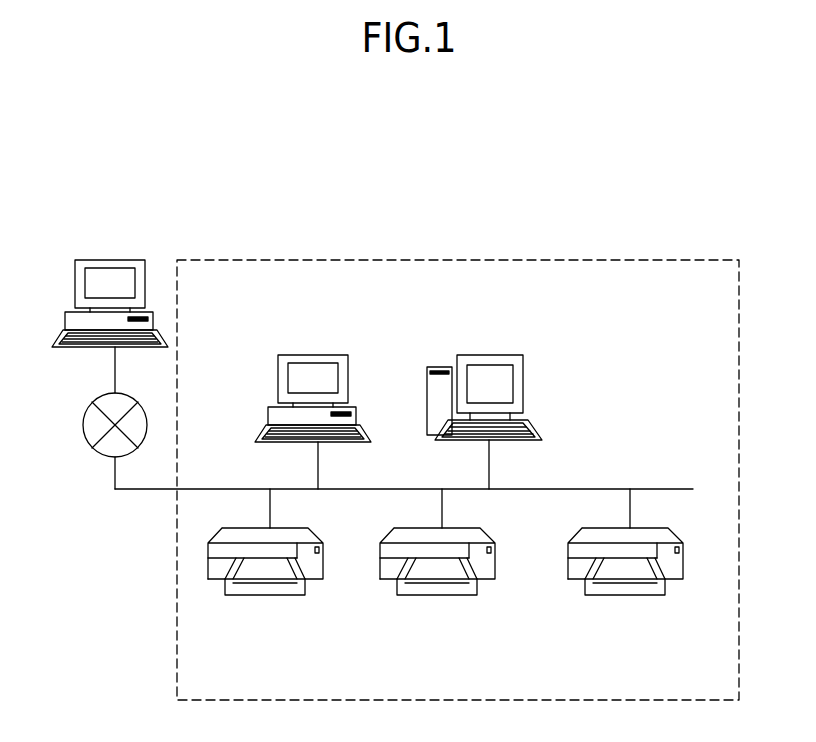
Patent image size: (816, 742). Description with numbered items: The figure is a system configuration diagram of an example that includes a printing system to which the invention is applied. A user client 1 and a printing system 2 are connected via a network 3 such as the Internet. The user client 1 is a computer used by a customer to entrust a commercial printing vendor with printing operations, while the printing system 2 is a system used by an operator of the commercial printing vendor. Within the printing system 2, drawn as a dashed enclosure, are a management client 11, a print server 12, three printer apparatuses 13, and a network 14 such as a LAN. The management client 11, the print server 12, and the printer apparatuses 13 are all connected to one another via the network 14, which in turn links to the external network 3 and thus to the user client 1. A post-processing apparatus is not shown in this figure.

The user client 1 is at (111, 260).
The printing system 2 is at (607, 257).
The network 3 is at (83, 423).
The management client 11 is at (313, 355).
The print server 12 is at (493, 355).
The printer apparatus 13 is at (270, 595).
The network 14 is at (588, 489).